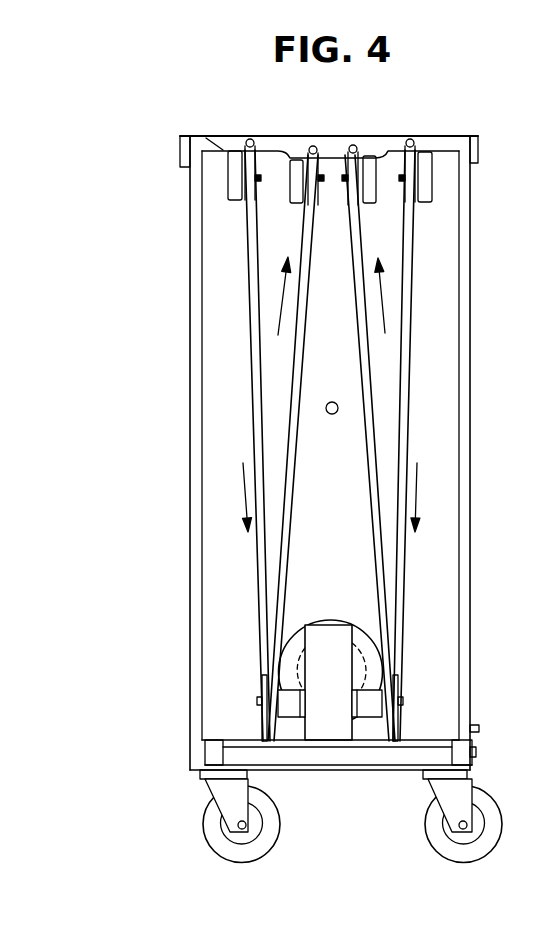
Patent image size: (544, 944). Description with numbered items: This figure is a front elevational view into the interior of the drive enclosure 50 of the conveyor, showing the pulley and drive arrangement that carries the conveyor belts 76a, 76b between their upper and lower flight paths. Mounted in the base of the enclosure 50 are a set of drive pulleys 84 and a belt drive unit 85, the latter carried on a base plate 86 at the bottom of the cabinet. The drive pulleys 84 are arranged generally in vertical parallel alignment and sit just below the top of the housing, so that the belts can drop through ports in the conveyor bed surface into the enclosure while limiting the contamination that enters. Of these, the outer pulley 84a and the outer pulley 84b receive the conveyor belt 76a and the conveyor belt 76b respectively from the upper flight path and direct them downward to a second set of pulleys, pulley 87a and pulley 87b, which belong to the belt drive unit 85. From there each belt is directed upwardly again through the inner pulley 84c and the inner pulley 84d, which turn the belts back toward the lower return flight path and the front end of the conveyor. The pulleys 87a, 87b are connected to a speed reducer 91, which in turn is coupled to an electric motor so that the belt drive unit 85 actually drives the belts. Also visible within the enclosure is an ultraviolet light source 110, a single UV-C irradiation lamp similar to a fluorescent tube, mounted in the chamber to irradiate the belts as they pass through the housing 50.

The drive enclosure 50 is at (472, 273).
The conveyor belt 76a is at (363, 233).
The conveyor belt 76b is at (253, 381).
The drive pulleys 84 is at (222, 174).
The outer pulley 84a is at (437, 152).
The outer pulley 84b is at (226, 146).
The inner pulley 84c is at (380, 158).
The inner pulley 84d is at (288, 160).
The belt drive unit 85 is at (403, 703).
The base plate 86 is at (212, 753).
The pulley 87a is at (402, 668).
The pulley 87b is at (258, 688).
The speed reducer 91 is at (323, 620).
The ultraviolet light source 110 is at (336, 414).